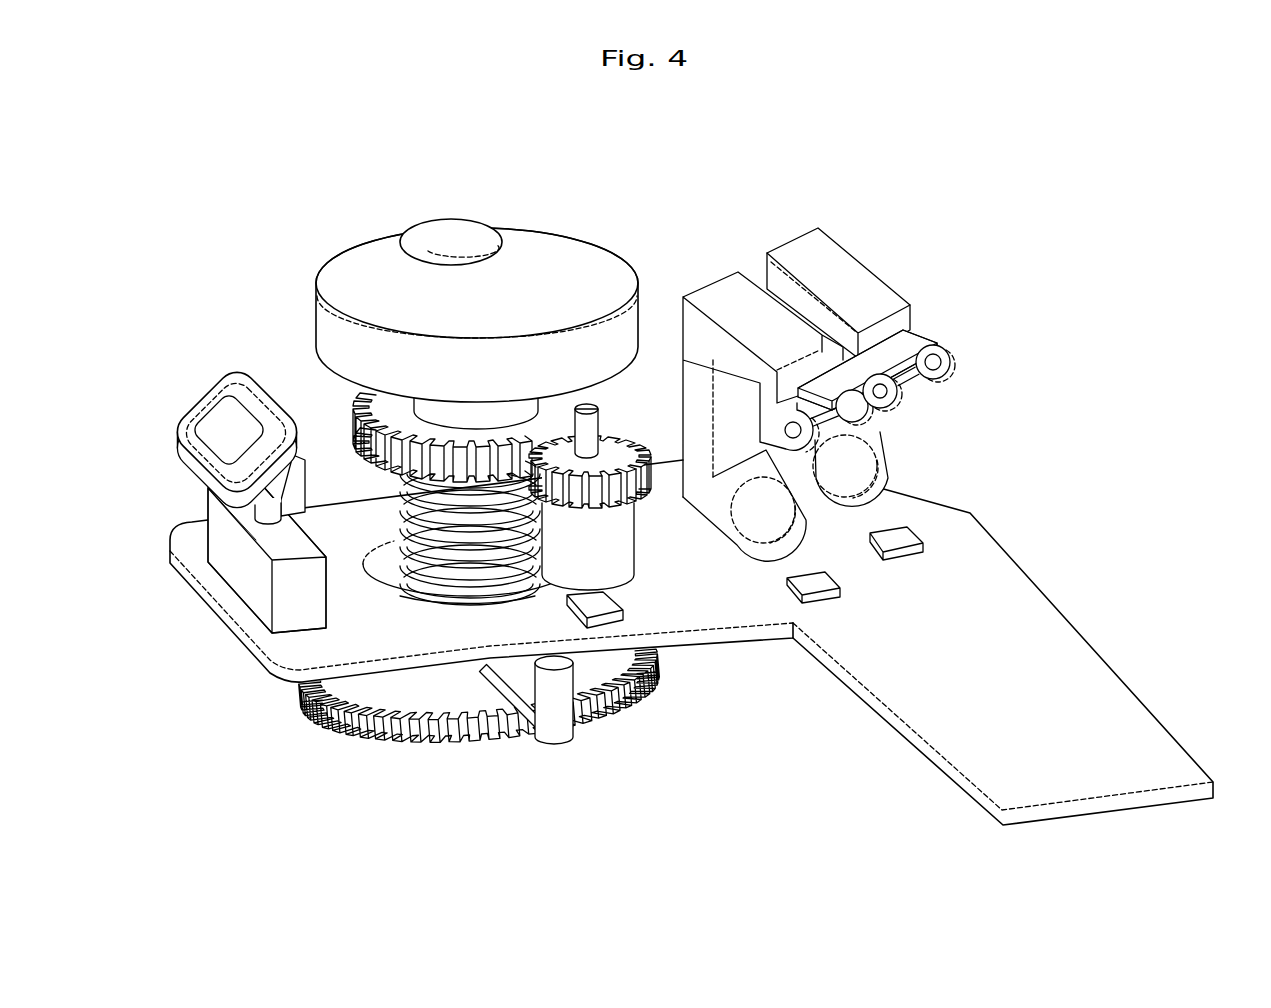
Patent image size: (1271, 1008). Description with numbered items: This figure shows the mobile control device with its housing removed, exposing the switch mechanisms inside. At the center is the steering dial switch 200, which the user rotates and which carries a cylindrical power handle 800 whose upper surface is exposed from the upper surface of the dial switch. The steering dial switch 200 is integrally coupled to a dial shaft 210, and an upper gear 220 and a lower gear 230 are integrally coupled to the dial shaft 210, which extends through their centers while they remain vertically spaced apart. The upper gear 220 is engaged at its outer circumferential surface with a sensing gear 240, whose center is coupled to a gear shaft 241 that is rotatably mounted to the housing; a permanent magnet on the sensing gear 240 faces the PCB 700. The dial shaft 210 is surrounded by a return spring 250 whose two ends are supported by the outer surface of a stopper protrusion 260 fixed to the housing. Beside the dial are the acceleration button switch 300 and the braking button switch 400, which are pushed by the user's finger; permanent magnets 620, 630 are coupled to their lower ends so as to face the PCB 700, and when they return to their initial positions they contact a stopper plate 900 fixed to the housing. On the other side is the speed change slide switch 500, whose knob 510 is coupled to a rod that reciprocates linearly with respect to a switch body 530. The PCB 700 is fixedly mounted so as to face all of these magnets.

The steering dial switch 200 is at (543, 250).
The dial shaft 210 is at (443, 413).
The upper gear 220 is at (353, 438).
The lower gear 230 is at (447, 742).
The sensing gear 240 is at (613, 495).
The gear shaft 241 is at (586, 406).
The return spring 250 is at (430, 576).
The stopper protrusion 260 is at (557, 735).
The acceleration button switch 300 is at (716, 290).
The braking button switch 400 is at (800, 252).
The speed change slide switch 500 is at (208, 457).
The knob 510 is at (213, 417).
The switch body 530 is at (218, 518).
The permanent magnet 620 is at (763, 498).
The permanent magnet 630 is at (865, 462).
The PCB 700 is at (1075, 647).
The power handle 800 is at (446, 234).
The stopper plate 900 is at (917, 340).